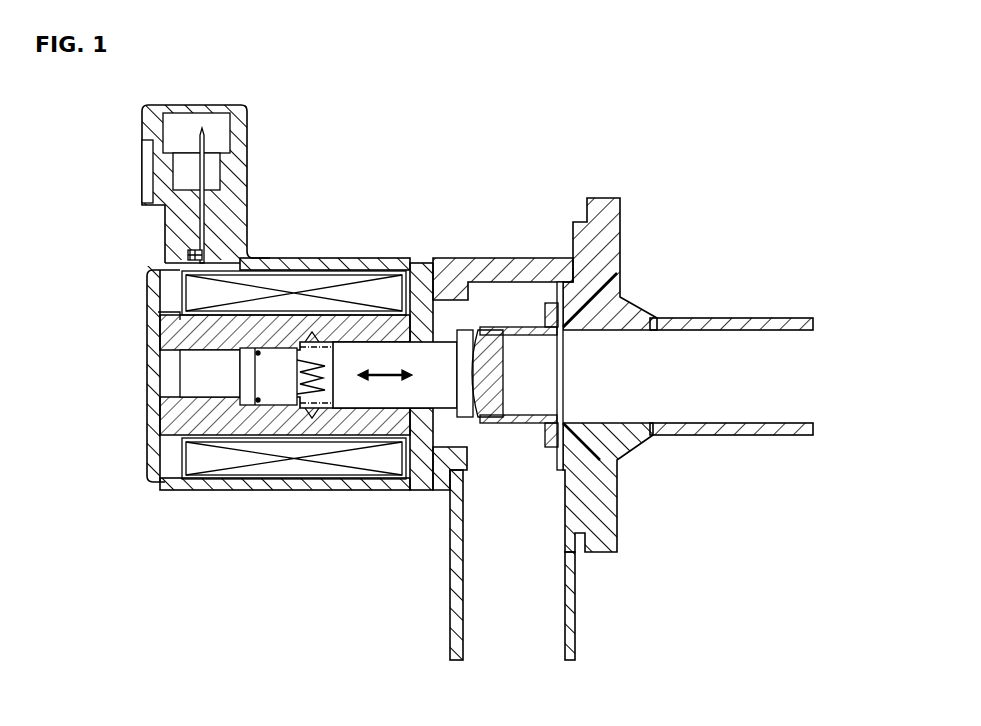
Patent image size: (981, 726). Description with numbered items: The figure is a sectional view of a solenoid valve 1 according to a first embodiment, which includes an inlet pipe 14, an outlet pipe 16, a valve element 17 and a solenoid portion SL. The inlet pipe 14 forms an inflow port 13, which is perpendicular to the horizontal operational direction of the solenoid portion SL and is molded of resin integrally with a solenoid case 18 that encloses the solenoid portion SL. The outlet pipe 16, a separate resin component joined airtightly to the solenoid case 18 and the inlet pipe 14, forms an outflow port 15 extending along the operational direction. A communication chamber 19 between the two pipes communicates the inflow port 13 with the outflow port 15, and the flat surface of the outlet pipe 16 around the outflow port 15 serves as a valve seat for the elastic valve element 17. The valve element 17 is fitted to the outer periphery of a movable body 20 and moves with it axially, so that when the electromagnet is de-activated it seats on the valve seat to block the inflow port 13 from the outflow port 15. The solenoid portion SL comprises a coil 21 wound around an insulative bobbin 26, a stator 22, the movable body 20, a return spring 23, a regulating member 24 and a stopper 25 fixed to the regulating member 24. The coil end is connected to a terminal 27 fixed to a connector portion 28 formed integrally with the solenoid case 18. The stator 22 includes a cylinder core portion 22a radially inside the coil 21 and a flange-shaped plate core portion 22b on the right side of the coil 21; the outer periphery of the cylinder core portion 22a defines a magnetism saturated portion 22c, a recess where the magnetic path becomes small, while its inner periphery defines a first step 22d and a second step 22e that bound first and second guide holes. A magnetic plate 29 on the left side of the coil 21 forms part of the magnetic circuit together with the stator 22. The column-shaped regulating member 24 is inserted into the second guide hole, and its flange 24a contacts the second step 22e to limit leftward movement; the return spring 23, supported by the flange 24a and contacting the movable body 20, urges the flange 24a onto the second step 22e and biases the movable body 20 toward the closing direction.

The solenoid valve 1 is at (522, 133).
The inflow port 13 is at (528, 604).
The inlet pipe 14 is at (578, 618).
The outflow port 15 is at (735, 399).
The outlet pipe 16 is at (760, 432).
The valve element 17 is at (552, 305).
The solenoid case 18 is at (395, 260).
The communication chamber 19 is at (528, 325).
The movable body 20 is at (412, 350).
The coil 21 is at (289, 282).
The stator 22 is at (260, 377).
The cylinder core portion 22a is at (197, 440).
The plate core portion 22b is at (424, 440).
The magnetism saturated portion 22c is at (345, 420).
The first step 22d is at (310, 340).
The second step 22e is at (237, 350).
The return spring 23 is at (262, 348).
The regulating member 24 is at (277, 395).
The flange 24a is at (257, 400).
The stopper 25 is at (302, 400).
The bobbin 26 is at (352, 318).
The terminal 27 is at (205, 172).
The connector portion 28 is at (238, 130).
The magnetic plate 29 is at (165, 451).
The solenoid portion SL is at (341, 253).